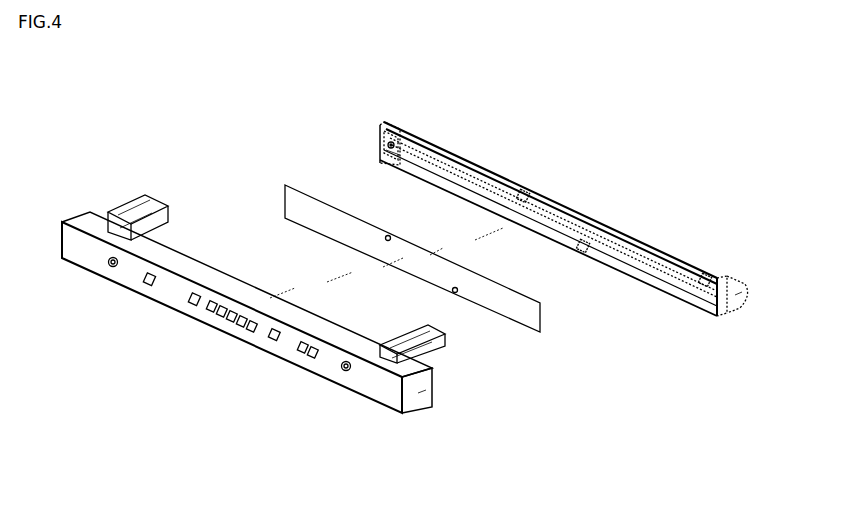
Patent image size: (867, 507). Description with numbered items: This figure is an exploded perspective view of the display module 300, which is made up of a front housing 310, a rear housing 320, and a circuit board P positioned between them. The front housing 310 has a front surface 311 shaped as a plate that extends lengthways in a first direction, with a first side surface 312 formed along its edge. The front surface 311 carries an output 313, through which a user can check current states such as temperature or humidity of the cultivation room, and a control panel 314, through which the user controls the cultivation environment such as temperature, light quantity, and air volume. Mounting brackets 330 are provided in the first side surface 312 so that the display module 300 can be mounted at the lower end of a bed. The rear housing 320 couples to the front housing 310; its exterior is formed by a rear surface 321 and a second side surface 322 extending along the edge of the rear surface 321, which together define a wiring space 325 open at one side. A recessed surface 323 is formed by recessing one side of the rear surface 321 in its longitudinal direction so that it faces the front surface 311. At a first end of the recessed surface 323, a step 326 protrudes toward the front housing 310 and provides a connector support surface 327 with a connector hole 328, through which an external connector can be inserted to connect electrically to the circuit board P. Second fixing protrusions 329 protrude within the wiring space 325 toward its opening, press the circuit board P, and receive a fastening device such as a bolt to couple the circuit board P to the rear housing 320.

The display module 300 is at (668, 128).
The front housing 310 is at (273, 310).
The front surface 311 is at (375, 392).
The first side surface 312 is at (418, 393).
The output 313 is at (227, 293).
The control panel 314 is at (265, 350).
The rear housing 320 is at (561, 229).
The rear surface 321 is at (735, 295).
The second side surface 322 is at (718, 280).
The recessed surface 323 is at (487, 160).
The wiring space 325 is at (576, 200).
The step 326 is at (430, 140).
The connector support surface 327 is at (395, 167).
The connector hole 328 is at (402, 122).
The second fixing protrusion 329 is at (528, 193).
The mounting bracket 330 is at (136, 204).
The circuit board P is at (527, 333).